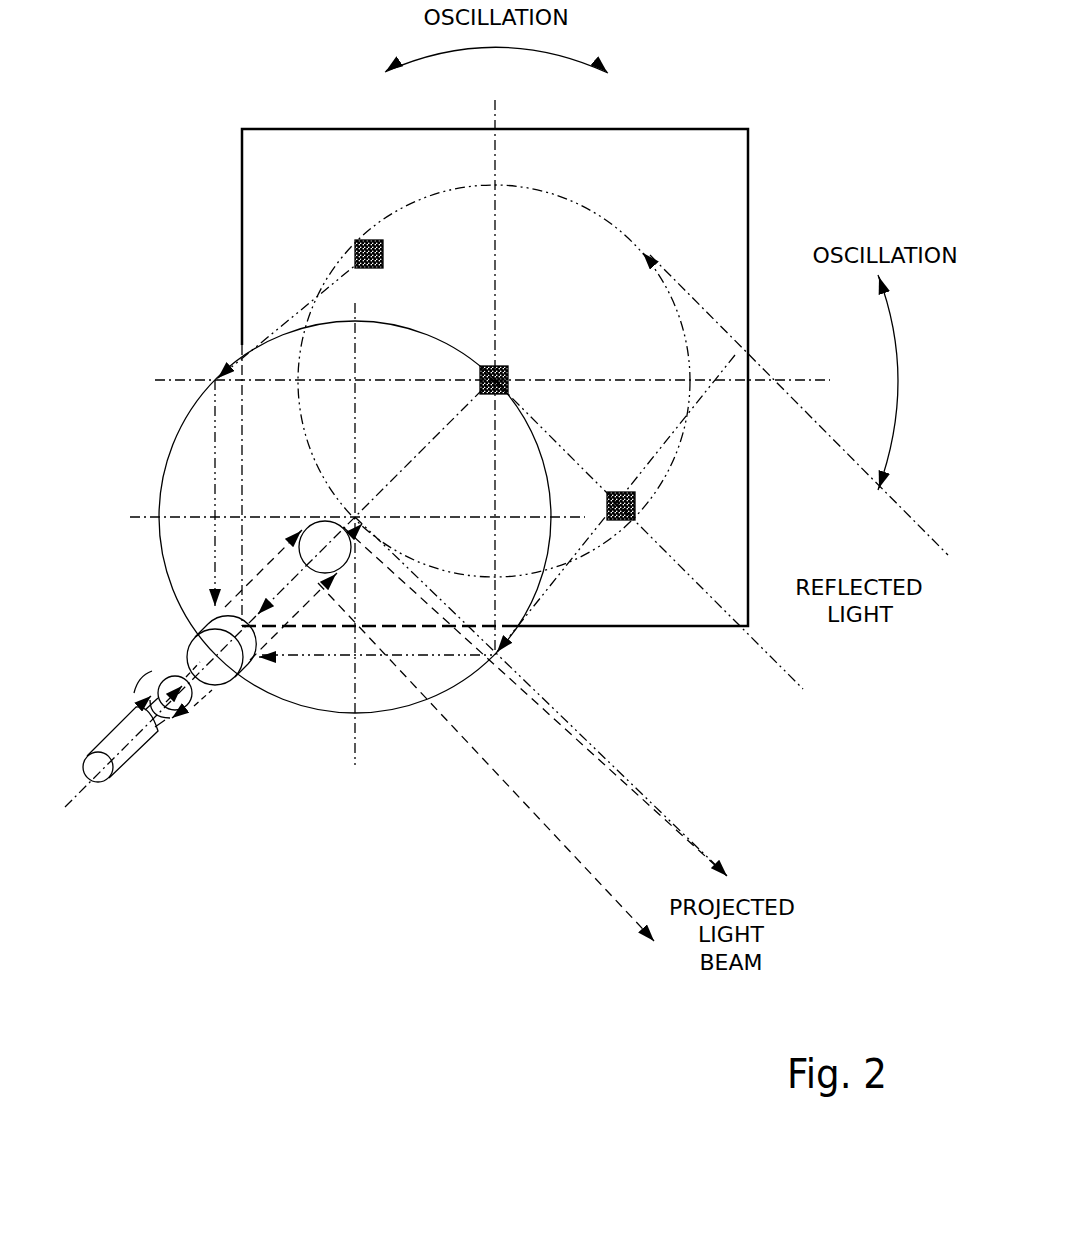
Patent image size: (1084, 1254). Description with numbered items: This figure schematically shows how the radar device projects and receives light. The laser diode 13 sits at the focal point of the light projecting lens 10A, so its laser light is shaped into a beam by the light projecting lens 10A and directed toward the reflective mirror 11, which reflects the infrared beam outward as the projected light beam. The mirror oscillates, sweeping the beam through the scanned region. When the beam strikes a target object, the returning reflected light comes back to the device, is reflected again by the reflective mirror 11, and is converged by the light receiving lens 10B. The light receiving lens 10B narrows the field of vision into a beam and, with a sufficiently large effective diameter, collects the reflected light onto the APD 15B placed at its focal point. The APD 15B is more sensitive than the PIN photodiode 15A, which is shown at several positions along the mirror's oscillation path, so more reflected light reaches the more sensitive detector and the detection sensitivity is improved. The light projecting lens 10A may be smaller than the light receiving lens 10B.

The reflective mirror 11 is at (688, 129).
The PIN photodiode 15A is at (383, 256).
The light receiving lens 10B is at (197, 470).
The APD 15B is at (230, 683).
The light projecting lens 10A is at (128, 694).
The laser diode 13 is at (90, 753).